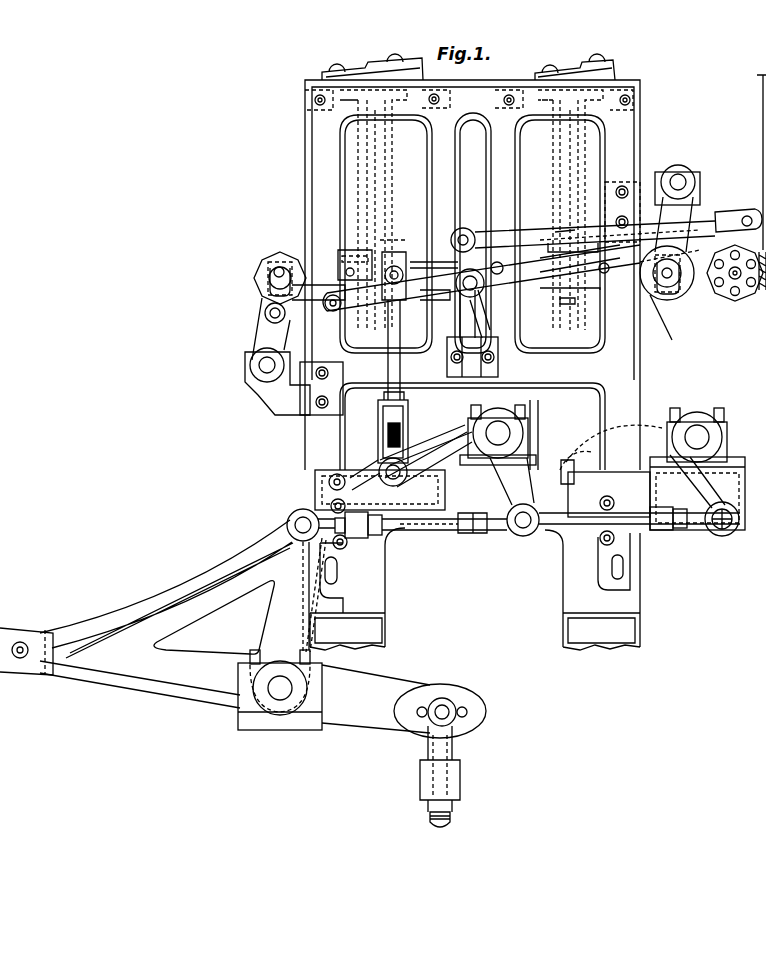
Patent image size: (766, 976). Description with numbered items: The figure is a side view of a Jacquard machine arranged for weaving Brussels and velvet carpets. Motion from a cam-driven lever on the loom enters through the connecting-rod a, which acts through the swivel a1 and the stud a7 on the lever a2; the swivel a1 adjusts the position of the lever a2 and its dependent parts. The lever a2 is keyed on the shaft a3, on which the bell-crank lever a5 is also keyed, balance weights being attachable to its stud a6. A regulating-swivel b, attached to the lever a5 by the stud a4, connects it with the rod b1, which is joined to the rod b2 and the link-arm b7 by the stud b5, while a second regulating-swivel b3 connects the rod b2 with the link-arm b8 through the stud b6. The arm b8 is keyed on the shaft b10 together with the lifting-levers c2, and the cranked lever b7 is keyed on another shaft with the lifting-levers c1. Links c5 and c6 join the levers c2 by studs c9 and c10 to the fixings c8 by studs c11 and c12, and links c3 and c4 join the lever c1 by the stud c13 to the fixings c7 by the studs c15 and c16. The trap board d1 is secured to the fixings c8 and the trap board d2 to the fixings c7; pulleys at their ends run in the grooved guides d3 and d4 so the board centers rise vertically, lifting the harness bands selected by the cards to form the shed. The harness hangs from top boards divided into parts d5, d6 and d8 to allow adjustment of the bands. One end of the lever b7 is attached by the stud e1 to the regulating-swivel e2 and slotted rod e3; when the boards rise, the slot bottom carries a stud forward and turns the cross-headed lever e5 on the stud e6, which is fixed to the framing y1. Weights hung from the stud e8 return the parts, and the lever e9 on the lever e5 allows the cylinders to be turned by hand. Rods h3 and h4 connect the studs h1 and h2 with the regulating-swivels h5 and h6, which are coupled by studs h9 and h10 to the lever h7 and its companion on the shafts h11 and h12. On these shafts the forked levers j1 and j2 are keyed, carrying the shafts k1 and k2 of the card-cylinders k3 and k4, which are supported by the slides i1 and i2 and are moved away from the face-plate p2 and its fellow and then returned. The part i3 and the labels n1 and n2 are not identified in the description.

The connecting-rod a is at (452, 826).
The swivel a1 is at (455, 792).
The lever a2 is at (404, 701).
The shaft a3 is at (280, 690).
The stud a4 is at (290, 520).
The bell-crank lever a5 is at (166, 614).
The stud a6 is at (20, 660).
The stud a7 is at (448, 706).
The regulating-swivel b is at (366, 538).
The rod b1 is at (440, 532).
The rod b2 is at (592, 526).
The regulating-swivel b3 is at (675, 540).
The stud b5 is at (523, 536).
The stud b6 is at (722, 536).
The link arm or cranked lever b7 is at (512, 481).
The link-arm b8 is at (697, 492).
The shaft b10 is at (697, 435).
The lifting-lever c1 is at (428, 451).
The lifting-lever c2 is at (614, 443).
The link c3 is at (385, 462).
The link c4 is at (427, 410).
The link c5 is at (547, 435).
The link c6 is at (575, 460).
The fixings c7 is at (398, 262).
The fixings c8 is at (580, 267).
The stud c9 is at (557, 483).
The stud c10 is at (609, 508).
The stud c11 is at (456, 282).
The stud c12 is at (609, 270).
The stud c13 is at (330, 482).
The stud c15 is at (343, 253).
The stud c16 is at (434, 254).
The lift or trap board d1 is at (387, 72).
The lift or trap board d2 is at (396, 227).
The grooved guide d3 is at (372, 183).
The grooved guide d4 is at (570, 172).
The top board part d5 is at (369, 65).
The top board part d6 is at (556, 74).
The top board part d8 is at (608, 68).
The stud e1 is at (498, 356).
The regulating-swivel e2 is at (380, 418).
The slotted rod e3 is at (388, 371).
The cross-headed lever e5 is at (438, 291).
The stud e6 is at (499, 260).
The stud e8 is at (333, 296).
The lever e9 is at (542, 260).
The stud h1 is at (468, 236).
The stud h2 is at (487, 300).
The rod h3 is at (462, 310).
The rod h4 is at (595, 227).
The regulating-swivel h5 is at (294, 373).
The regulating-swivel h6 is at (622, 212).
The lever h7 is at (271, 329).
The stud h9 is at (688, 220).
The stud h10 is at (265, 313).
The shaft h11 is at (680, 180).
The shaft h12 is at (258, 367).
The slide i1 is at (573, 236).
The slide i2 is at (570, 304).
The link i3 is at (670, 260).
The forked lever j1 is at (680, 292).
The forked lever j2 is at (262, 282).
The shaft of card-cylinder k1 is at (281, 268).
The shaft of card-cylinder k2 is at (666, 300).
The card-cylinder k3 is at (673, 319).
The card-cylinder k4 is at (272, 266).
The slot n1 is at (570, 333).
The slot n2 is at (365, 333).
The face-plate p2 is at (745, 300).
The framing y1 is at (472, 260).